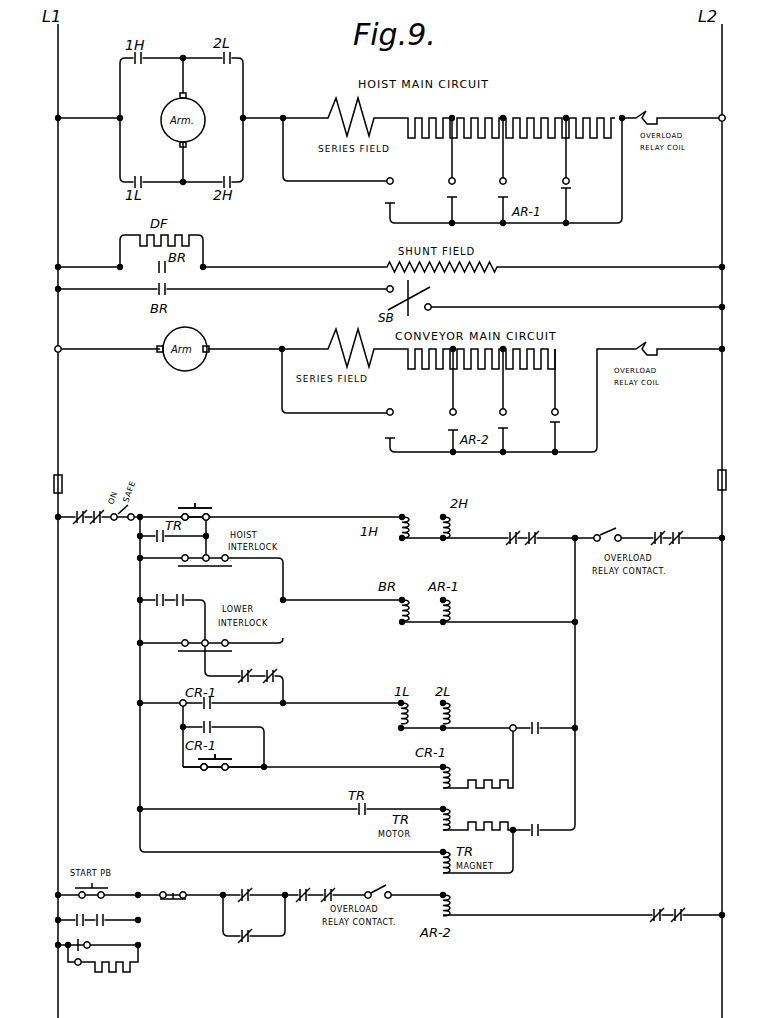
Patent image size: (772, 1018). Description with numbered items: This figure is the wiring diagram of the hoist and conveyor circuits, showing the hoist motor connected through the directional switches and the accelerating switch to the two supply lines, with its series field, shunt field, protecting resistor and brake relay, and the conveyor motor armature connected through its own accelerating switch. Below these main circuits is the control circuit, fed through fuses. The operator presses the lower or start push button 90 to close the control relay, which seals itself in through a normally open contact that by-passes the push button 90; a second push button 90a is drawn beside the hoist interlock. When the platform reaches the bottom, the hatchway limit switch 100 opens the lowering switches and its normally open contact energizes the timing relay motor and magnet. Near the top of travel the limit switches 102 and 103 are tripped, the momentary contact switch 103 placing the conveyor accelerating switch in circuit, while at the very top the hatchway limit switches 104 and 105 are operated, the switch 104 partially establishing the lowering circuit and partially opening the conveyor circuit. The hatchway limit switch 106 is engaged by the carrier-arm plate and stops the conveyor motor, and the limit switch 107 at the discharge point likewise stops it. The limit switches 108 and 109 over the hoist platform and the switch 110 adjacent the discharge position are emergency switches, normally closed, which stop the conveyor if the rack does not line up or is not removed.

The lower or start push button 90 is at (223, 773).
The push button switch 90a is at (197, 506).
The hatchway limit switch 100 is at (535, 722).
The limit switch 102 is at (259, 669).
The limit switch 103 is at (73, 915).
The hatchway limit switch 104 is at (182, 594).
The hatchway limit switch 105 is at (540, 524).
The hatchway limit switch 106 is at (163, 589).
The limit switch 107 is at (303, 889).
The hatchway limit switch 108 is at (84, 507).
The hatchway limit switch 109 is at (97, 524).
The emergency limit switch 110 is at (657, 909).